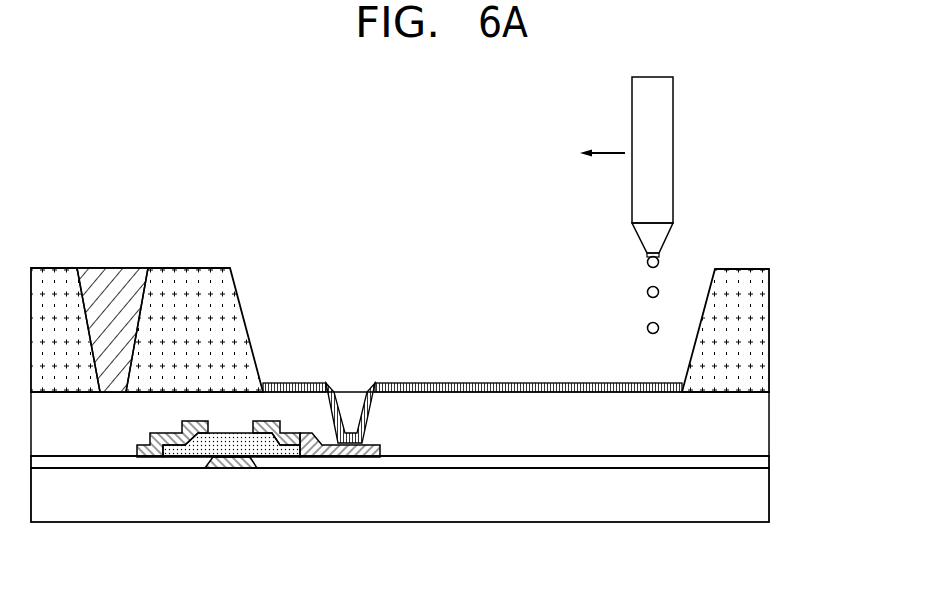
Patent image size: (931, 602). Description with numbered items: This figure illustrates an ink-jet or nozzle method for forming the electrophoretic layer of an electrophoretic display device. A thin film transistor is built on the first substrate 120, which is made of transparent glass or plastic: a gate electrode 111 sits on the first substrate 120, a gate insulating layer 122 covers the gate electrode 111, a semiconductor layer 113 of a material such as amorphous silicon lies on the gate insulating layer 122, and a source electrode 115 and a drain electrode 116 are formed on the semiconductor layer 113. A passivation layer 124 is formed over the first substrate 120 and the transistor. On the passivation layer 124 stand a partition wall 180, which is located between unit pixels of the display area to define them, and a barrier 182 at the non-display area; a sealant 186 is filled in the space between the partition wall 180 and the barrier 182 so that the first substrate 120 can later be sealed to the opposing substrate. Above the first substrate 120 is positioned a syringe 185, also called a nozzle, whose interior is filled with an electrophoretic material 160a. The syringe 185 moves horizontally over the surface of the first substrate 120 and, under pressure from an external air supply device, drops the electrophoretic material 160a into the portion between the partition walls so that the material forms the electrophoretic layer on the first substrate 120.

The gate electrode 111 is at (228, 468).
The semiconductor layer 113 is at (183, 452).
The source electrode 115 is at (146, 457).
The drain electrode 116 is at (332, 452).
The first substrate 120 is at (755, 503).
The gate insulating layer 122 is at (755, 462).
The passivation layer 124 is at (755, 426).
The electrophoretic material 160a is at (660, 290).
The partition wall 180 is at (752, 318).
The barrier 182 is at (52, 383).
The syringe 185 is at (673, 150).
The sealant 186 is at (102, 383).